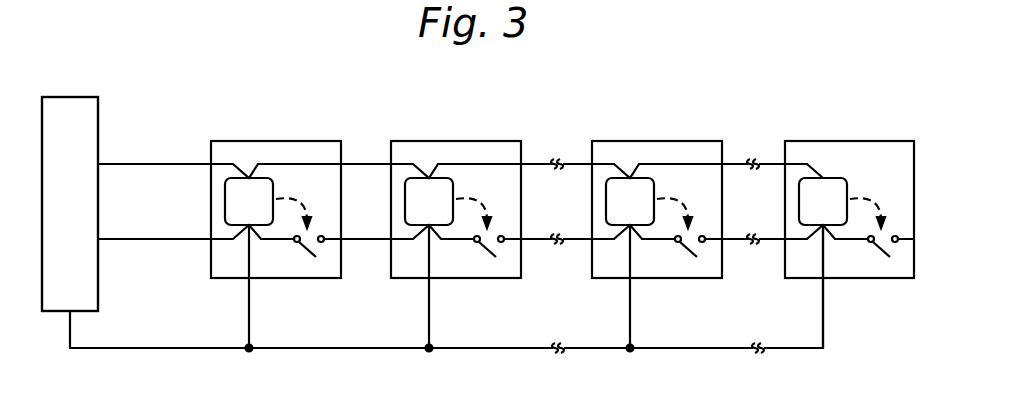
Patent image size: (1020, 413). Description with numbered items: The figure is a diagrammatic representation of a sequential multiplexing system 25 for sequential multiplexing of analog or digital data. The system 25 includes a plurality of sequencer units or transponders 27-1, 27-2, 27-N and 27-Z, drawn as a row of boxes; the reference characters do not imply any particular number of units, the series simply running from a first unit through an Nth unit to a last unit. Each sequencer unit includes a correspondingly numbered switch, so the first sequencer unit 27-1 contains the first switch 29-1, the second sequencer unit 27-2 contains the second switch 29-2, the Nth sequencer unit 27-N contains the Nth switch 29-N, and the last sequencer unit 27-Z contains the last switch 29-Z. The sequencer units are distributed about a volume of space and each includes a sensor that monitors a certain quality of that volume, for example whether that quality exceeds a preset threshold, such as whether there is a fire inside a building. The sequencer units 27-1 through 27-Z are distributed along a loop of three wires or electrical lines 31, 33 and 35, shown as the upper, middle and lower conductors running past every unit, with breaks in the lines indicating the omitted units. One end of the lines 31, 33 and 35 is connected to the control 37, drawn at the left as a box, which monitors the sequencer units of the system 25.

The sequential multiplexing system 25 is at (453, 360).
The first sequencer unit 27-1 is at (258, 141).
The second sequencer unit 27-2 is at (464, 141).
The Nth sequencer unit 27-N is at (672, 141).
The last sequencer unit 27-Z is at (848, 141).
The first switch 29-1 is at (307, 250).
The second switch 29-2 is at (487, 250).
The Nth switch 29-N is at (688, 250).
The last switch 29-Z is at (881, 250).
The first electrical line 31 is at (163, 162).
The second electrical line 33 is at (176, 241).
The third electrical line 35 is at (190, 350).
The control 37 is at (78, 97).